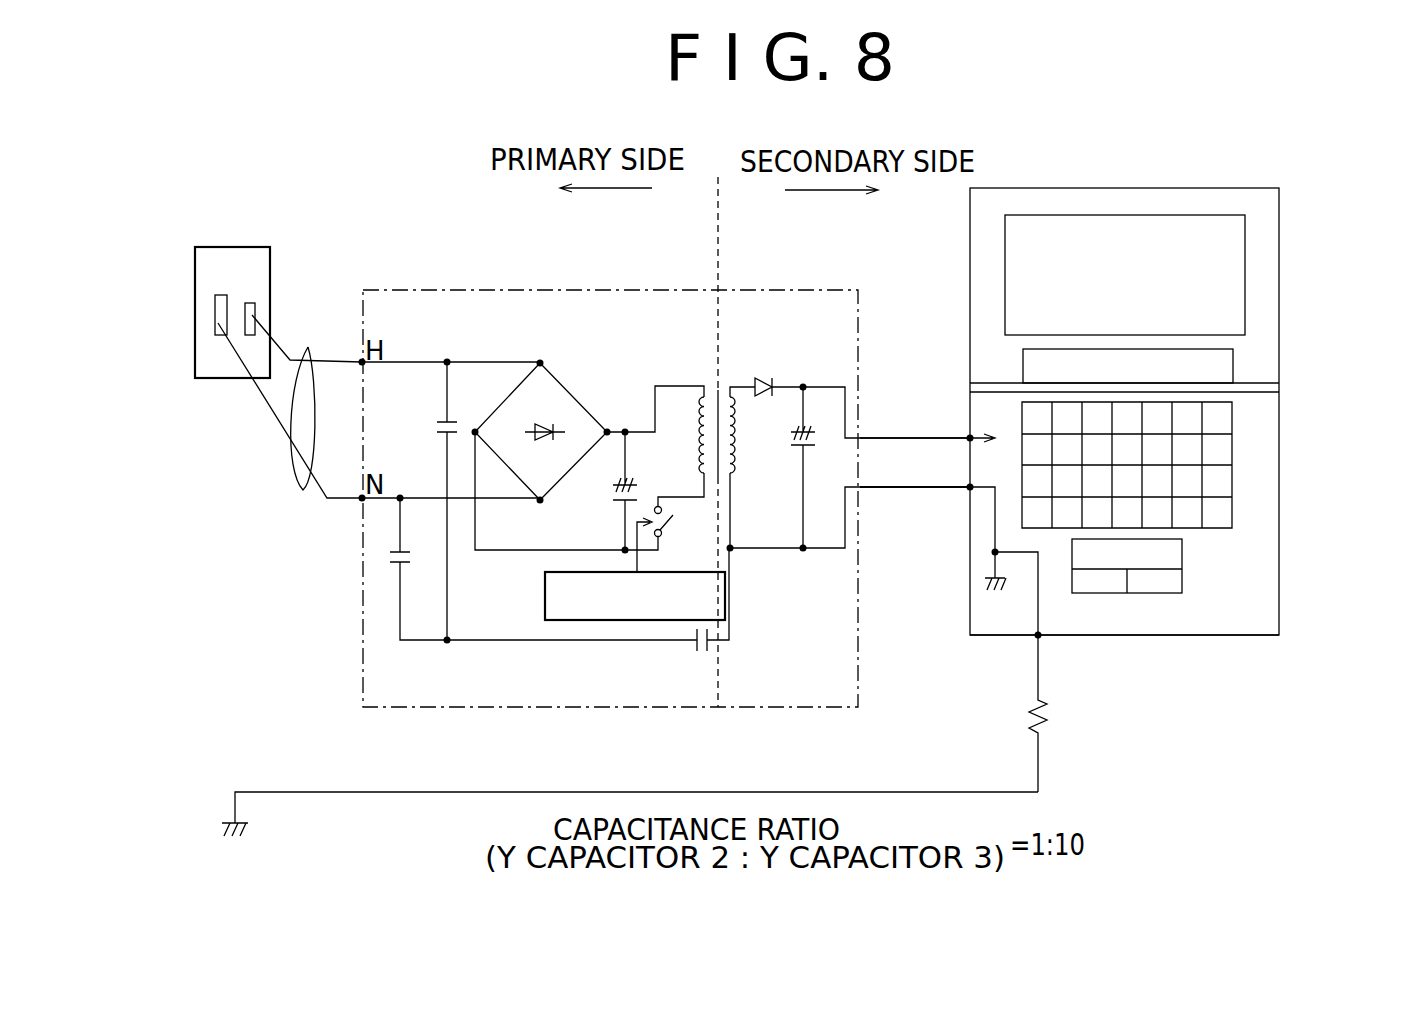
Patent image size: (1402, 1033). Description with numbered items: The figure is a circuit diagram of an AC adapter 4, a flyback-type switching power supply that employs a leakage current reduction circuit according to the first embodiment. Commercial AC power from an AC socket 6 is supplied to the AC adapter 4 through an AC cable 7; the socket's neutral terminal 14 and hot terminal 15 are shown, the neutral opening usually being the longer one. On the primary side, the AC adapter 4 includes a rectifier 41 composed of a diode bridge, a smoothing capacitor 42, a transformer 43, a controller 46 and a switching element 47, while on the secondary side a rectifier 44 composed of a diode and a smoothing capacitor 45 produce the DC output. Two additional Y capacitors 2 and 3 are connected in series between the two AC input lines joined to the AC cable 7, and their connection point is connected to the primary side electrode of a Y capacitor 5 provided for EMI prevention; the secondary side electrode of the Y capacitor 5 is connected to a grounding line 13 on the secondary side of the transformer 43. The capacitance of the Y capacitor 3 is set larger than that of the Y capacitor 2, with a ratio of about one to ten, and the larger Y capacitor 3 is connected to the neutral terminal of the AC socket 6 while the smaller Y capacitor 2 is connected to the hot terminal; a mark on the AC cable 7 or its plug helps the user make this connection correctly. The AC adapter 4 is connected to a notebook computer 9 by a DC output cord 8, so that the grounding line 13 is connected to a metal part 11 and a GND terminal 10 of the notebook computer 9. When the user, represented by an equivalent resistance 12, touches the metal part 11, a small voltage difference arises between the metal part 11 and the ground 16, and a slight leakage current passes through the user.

The Y capacitor 2 is at (442, 420).
The Y capacitor 3 is at (392, 568).
The AC adapter 4 is at (541, 290).
The Y capacitor 5 is at (737, 664).
The AC socket 6 is at (258, 247).
The AC cable 7 is at (305, 350).
The DC output cord 8 is at (920, 507).
The notebook computer 9 is at (1282, 331).
The GND terminal 10 is at (993, 568).
The metal part 11 is at (1038, 635).
The equivalent resistance 12 is at (1047, 724).
The grounding line 13 is at (918, 500).
The neutral terminal of AC socket 14 is at (215, 358).
The hot terminal of AC socket 15 is at (253, 309).
The ground 16 is at (644, 792).
The rectifier 41 is at (478, 428).
The smoothing capacitor 42 is at (615, 494).
The transformer 43 is at (726, 379).
The rectifier 44 is at (762, 400).
The smoothing capacitor 45 is at (796, 452).
The controller 46 is at (545, 588).
The switching element 47 is at (673, 530).